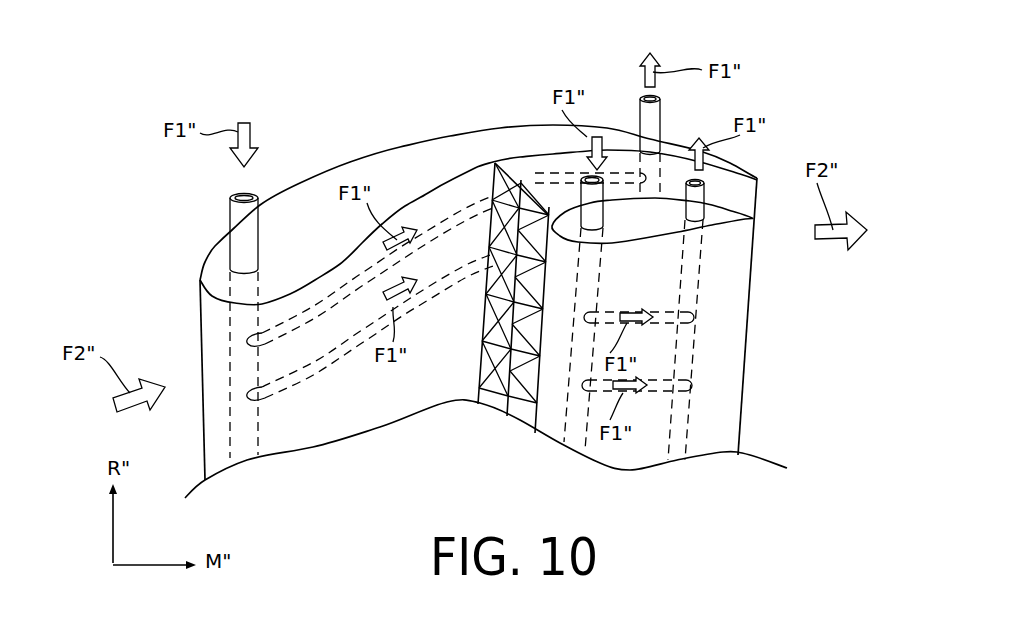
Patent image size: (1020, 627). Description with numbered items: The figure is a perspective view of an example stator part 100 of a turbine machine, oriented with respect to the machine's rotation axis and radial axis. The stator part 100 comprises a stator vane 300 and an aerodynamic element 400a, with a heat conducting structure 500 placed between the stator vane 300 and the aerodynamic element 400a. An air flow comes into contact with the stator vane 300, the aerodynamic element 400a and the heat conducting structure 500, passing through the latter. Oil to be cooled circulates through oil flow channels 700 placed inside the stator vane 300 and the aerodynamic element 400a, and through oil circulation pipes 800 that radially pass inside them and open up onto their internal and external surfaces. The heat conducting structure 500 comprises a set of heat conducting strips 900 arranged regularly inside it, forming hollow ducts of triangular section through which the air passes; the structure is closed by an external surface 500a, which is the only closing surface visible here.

The stator part 100 is at (298, 84).
The stator vane 300 is at (395, 163).
The aerodynamic element 400a is at (745, 302).
The heat conducting structure 500 is at (473, 367).
The external surface 500a is at (528, 170).
The oil flow channels 700 is at (340, 280).
The oil circulation pipes 800 is at (237, 233).
The heat conducting strips 900 is at (490, 230).